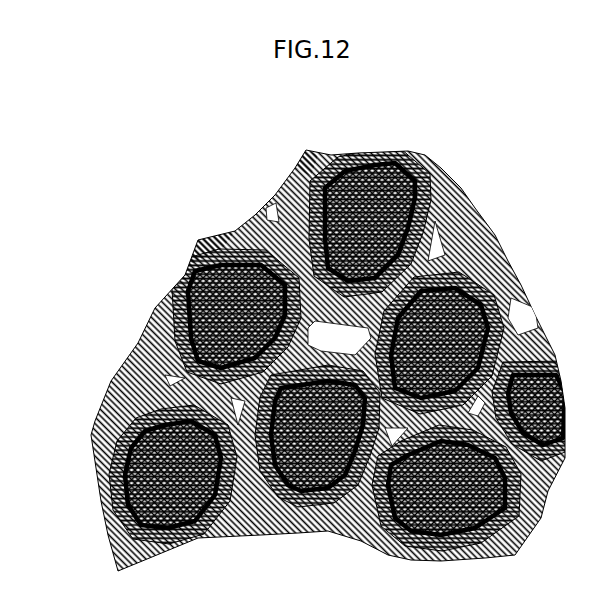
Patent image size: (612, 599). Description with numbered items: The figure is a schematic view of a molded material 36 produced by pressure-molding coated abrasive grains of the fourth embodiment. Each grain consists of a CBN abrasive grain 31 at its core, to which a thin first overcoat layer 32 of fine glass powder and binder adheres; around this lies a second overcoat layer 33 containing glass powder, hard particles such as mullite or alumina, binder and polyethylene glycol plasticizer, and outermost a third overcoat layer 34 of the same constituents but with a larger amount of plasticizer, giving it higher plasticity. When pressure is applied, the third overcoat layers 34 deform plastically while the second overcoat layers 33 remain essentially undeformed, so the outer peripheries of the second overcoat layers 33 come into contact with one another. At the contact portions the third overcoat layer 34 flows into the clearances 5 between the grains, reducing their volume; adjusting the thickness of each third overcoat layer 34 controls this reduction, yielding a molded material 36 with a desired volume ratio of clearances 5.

The clearance 5 is at (427, 233).
The CBN abrasive grain 31 is at (237, 303).
The first overcoat layer 32 is at (200, 237).
The second overcoat layer 33 is at (230, 247).
The third overcoat layer 34 is at (300, 143).
The molded material 36 is at (104, 201).